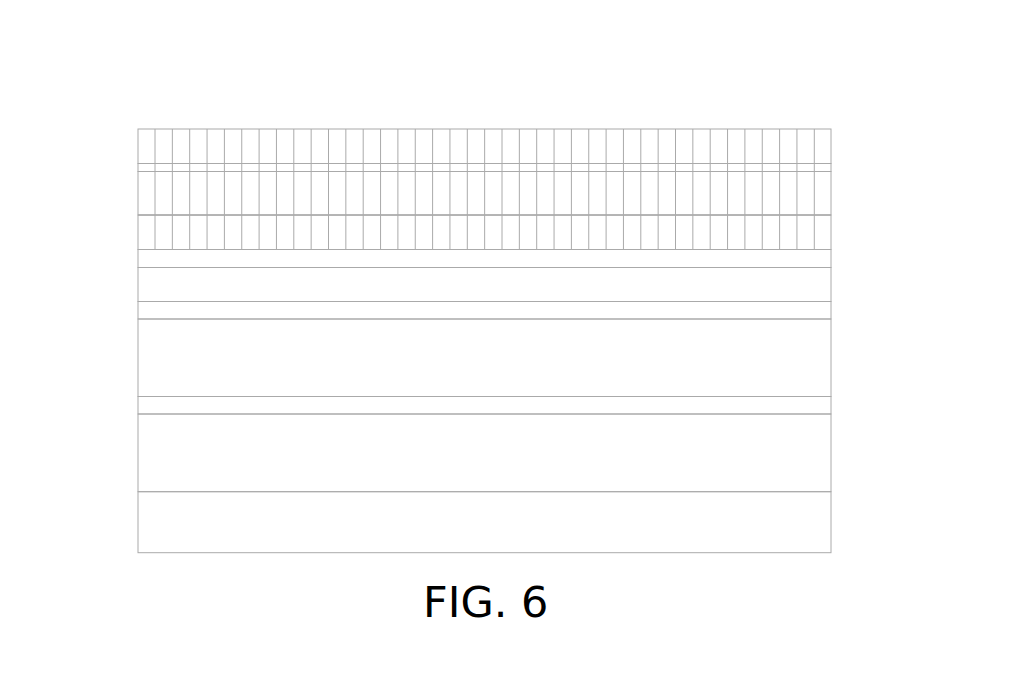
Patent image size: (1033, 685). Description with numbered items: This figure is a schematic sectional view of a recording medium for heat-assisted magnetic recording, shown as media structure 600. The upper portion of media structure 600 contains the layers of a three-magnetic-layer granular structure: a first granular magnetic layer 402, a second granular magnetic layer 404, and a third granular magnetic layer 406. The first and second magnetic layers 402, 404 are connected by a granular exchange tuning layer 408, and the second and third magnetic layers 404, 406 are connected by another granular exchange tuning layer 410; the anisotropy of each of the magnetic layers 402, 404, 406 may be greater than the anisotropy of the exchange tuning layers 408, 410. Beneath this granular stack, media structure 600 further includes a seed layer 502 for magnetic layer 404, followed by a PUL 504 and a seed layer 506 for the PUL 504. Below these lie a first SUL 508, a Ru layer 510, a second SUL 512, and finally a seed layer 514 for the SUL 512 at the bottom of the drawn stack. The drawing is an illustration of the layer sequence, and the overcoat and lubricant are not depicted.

The media structure 600 is at (190, 86).
The first granular magnetic layer 402 is at (831, 146).
The second granular magnetic layer 404 is at (831, 189).
The third granular magnetic layer 406 is at (831, 232).
The granular exchange tuning layer 408 is at (138, 165).
The granular exchange tuning layer 410 is at (138, 212).
The seed layer 502 is at (138, 258).
The PUL 504 is at (831, 285).
The seed layer 506 is at (138, 310).
The first SUL 508 is at (831, 358).
The Ru layer 510 is at (138, 405).
The second SUL 512 is at (831, 453).
The seed layer 514 is at (831, 522).